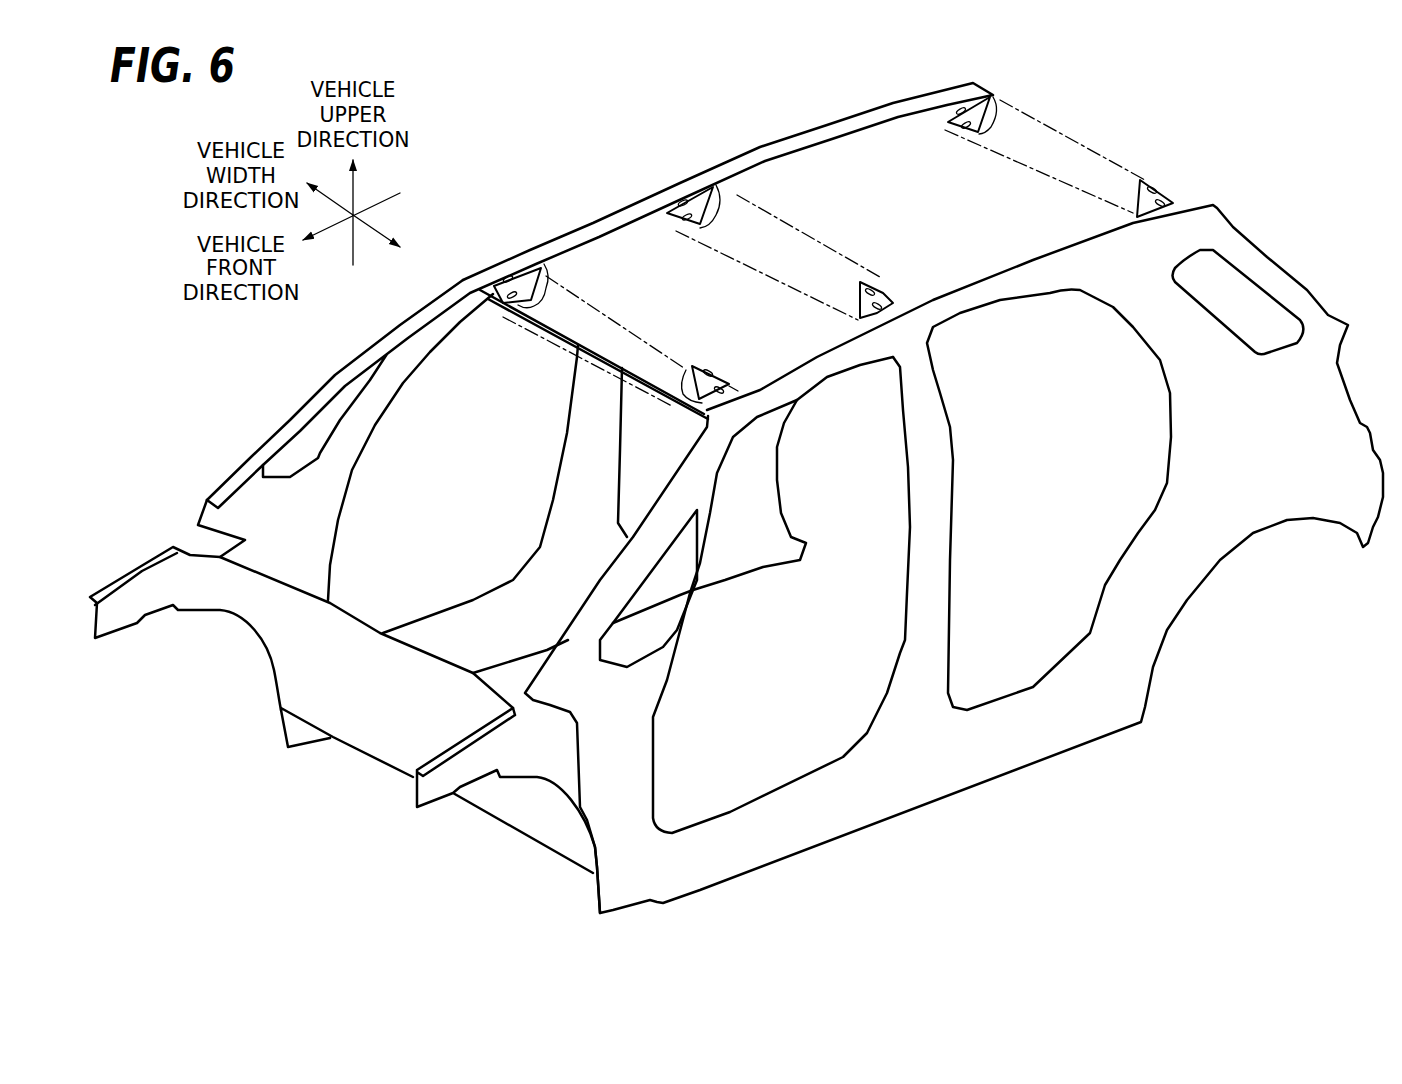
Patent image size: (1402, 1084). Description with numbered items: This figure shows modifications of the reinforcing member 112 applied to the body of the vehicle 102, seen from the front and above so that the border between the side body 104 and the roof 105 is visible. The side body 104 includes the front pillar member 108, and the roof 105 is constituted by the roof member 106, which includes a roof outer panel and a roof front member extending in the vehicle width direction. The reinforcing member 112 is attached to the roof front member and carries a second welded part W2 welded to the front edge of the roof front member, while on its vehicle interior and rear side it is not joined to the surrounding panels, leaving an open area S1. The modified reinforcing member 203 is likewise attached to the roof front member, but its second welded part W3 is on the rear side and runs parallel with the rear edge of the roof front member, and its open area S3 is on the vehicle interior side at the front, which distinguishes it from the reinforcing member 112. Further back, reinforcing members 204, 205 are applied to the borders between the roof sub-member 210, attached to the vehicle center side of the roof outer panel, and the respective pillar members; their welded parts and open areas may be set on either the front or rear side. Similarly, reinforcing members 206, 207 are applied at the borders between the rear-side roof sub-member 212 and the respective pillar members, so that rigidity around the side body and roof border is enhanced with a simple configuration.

The vehicle 102 is at (1244, 224).
The side body 104 is at (584, 341).
The roof 105 is at (609, 282).
The roof member 106 is at (595, 238).
The front pillar member 108 is at (330, 390).
The reinforcing member 112 is at (527, 283).
The reinforcing member 203 is at (704, 404).
The reinforcing member 204 is at (722, 200).
The reinforcing member 205 is at (873, 298).
The reinforcing member 206 is at (990, 96).
The reinforcing member 207 is at (1152, 182).
The roof sub-member 210 is at (821, 240).
The roof sub-member 212 is at (1060, 132).
The open area S1 is at (545, 296).
The open area S3 is at (695, 398).
The second welded part W2 is at (512, 300).
The second welded part W3 is at (722, 372).